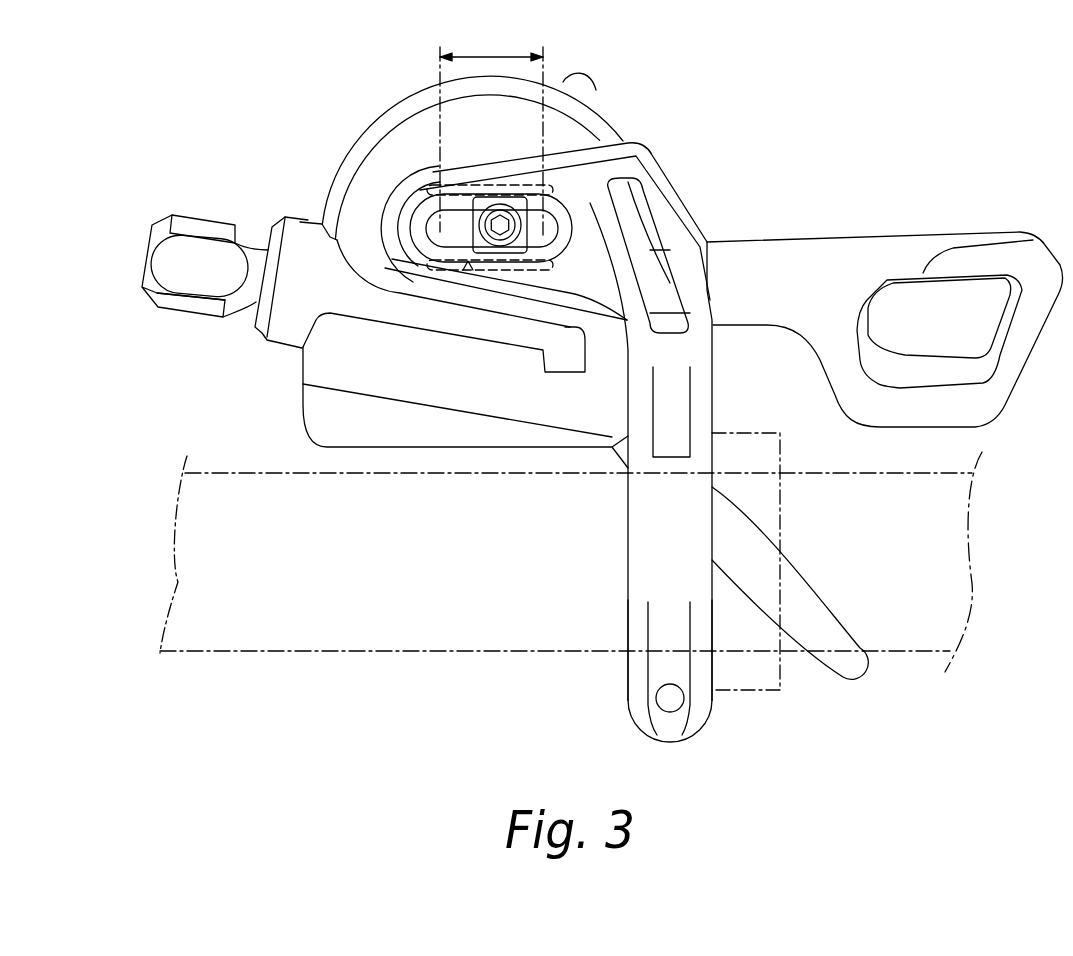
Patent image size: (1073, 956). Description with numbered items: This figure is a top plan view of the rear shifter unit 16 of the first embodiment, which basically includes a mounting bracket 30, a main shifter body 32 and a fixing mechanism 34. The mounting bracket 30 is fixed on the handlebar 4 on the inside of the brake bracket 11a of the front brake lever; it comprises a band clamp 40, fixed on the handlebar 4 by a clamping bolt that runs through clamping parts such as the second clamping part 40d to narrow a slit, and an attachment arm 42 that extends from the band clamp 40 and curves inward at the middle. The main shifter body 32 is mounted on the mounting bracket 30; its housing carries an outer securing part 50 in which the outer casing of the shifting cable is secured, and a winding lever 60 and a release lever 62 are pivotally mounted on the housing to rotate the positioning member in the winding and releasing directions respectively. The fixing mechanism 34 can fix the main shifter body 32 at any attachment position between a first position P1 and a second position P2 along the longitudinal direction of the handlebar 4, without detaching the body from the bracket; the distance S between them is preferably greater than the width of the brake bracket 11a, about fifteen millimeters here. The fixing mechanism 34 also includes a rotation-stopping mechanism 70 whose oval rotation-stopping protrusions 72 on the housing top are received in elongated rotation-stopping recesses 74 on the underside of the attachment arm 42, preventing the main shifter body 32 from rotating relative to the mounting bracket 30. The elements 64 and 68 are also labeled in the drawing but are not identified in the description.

The handlebar 4 is at (330, 358).
The outer securing part 50 is at (196, 224).
The main shifter body 32 is at (292, 412).
The rear shifter unit 16 is at (680, 105).
The attachment arm 42 is at (700, 192).
The fixing bolt 68 is at (500, 238).
The fixing mechanism 34 is at (522, 252).
The mounting portion 64 is at (445, 238).
The rotation-stopping mechanism 70 is at (470, 258).
The rotation-stopping recesses 74 is at (500, 262).
The rotation-stopping protrusions 72 is at (530, 263).
The first position P1 is at (440, 237).
The second position P2 is at (548, 225).
The distance S is at (491, 40).
The release lever 62 is at (895, 258).
The brake bracket 11a is at (780, 443).
The band clamp 40 is at (637, 590).
The second clamping part 40d is at (663, 700).
The mounting bracket 30 is at (720, 708).
The winding lever 60 is at (847, 667).